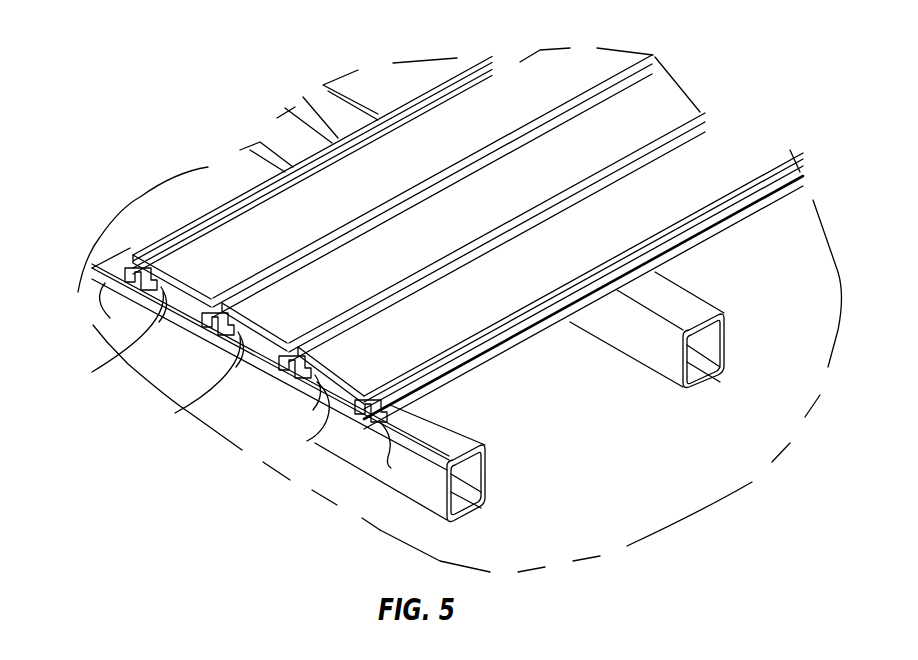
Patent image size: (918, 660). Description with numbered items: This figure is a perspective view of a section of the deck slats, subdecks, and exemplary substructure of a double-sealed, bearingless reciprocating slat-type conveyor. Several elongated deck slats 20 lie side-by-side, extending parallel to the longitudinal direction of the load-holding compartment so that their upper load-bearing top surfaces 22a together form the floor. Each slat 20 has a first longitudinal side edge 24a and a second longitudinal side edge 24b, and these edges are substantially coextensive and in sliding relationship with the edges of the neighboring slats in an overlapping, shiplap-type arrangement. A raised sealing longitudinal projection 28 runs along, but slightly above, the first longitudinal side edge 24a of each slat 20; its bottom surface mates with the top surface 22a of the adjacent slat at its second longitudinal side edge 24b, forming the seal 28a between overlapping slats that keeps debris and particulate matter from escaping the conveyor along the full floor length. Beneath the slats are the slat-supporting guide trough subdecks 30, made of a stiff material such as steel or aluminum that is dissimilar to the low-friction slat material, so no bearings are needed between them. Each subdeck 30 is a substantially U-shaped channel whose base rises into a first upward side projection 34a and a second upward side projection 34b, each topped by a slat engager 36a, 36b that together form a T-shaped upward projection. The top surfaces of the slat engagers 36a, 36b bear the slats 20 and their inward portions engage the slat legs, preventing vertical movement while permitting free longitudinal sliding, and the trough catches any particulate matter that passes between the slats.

The deck slat 20 is at (600, 66).
The top surface 22a is at (458, 153).
The first longitudinal side edge 24a is at (423, 88).
The second longitudinal side edge 24b is at (578, 275).
The raised sealing longitudinal projection 28 is at (265, 190).
The board joint 28a is at (293, 260).
The slat-supporting guide trough subdeck 30 is at (135, 294).
The first longitudinal side edge 34a is at (103, 285).
The second longitudinal side edge 34b is at (165, 313).
The slat engager 36a is at (208, 213).
The slat engager 36b is at (464, 362).